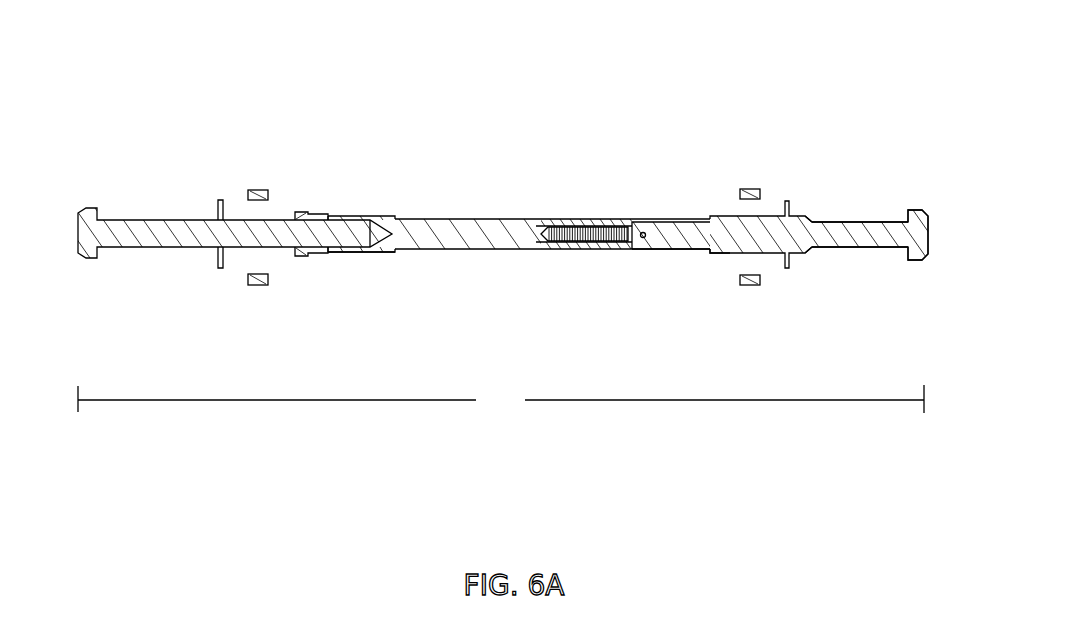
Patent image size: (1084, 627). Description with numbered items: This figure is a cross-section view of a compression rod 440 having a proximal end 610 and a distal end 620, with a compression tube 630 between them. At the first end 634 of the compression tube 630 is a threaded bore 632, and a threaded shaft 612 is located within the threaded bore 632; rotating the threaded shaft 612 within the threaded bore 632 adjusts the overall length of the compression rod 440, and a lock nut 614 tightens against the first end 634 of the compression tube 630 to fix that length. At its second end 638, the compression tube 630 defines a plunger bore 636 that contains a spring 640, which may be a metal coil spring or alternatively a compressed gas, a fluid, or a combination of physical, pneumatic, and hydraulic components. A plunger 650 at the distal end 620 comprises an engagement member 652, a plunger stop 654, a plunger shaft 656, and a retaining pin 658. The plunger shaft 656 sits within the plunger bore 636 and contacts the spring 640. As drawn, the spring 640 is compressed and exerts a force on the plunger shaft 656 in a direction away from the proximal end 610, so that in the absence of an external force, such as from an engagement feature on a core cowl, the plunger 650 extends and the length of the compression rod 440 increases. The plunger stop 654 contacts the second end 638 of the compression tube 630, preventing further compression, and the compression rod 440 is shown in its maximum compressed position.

The compression rod 440 is at (578, 78).
The proximal end 610 is at (133, 155).
The distal end 620 is at (858, 153).
The compression tube 630 is at (455, 219).
The threaded bore 632 is at (375, 214).
The first end 634 is at (315, 184).
The threaded shaft 612 is at (340, 253).
The lock nut 614 is at (293, 258).
The plunger bore 636 is at (713, 253).
The second end 638 is at (773, 182).
The spring 640 is at (573, 224).
The plunger 650 is at (845, 249).
The engagement member 652 is at (915, 262).
The plunger stop 654 is at (815, 253).
The plunger shaft 656 is at (697, 226).
The retaining pin 658 is at (645, 230).